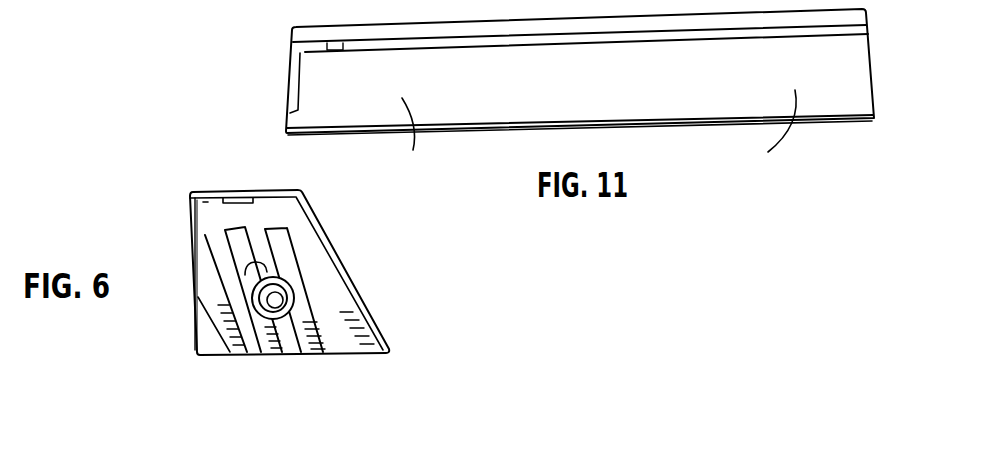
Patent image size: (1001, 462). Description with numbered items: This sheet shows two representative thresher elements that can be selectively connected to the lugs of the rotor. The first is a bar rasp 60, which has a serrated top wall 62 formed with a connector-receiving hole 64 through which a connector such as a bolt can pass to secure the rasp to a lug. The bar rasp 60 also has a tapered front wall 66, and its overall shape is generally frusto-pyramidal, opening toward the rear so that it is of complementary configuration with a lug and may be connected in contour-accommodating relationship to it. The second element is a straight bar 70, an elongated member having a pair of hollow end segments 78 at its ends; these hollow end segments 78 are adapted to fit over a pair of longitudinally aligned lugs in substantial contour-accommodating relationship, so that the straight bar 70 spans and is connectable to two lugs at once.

In FIG. 6, the bar rasp 60 is at (175, 363).
In FIG. 6, the serrated top wall 62 is at (212, 276).
In FIG. 6, the connector-receiving hole 64 is at (287, 312).
In FIG. 6, the tapered front wall 66 is at (232, 190).
In FIG. 11, the straight bar 70 is at (480, 148).
In FIG. 11, the hollow end segments 78 is at (594, 135).